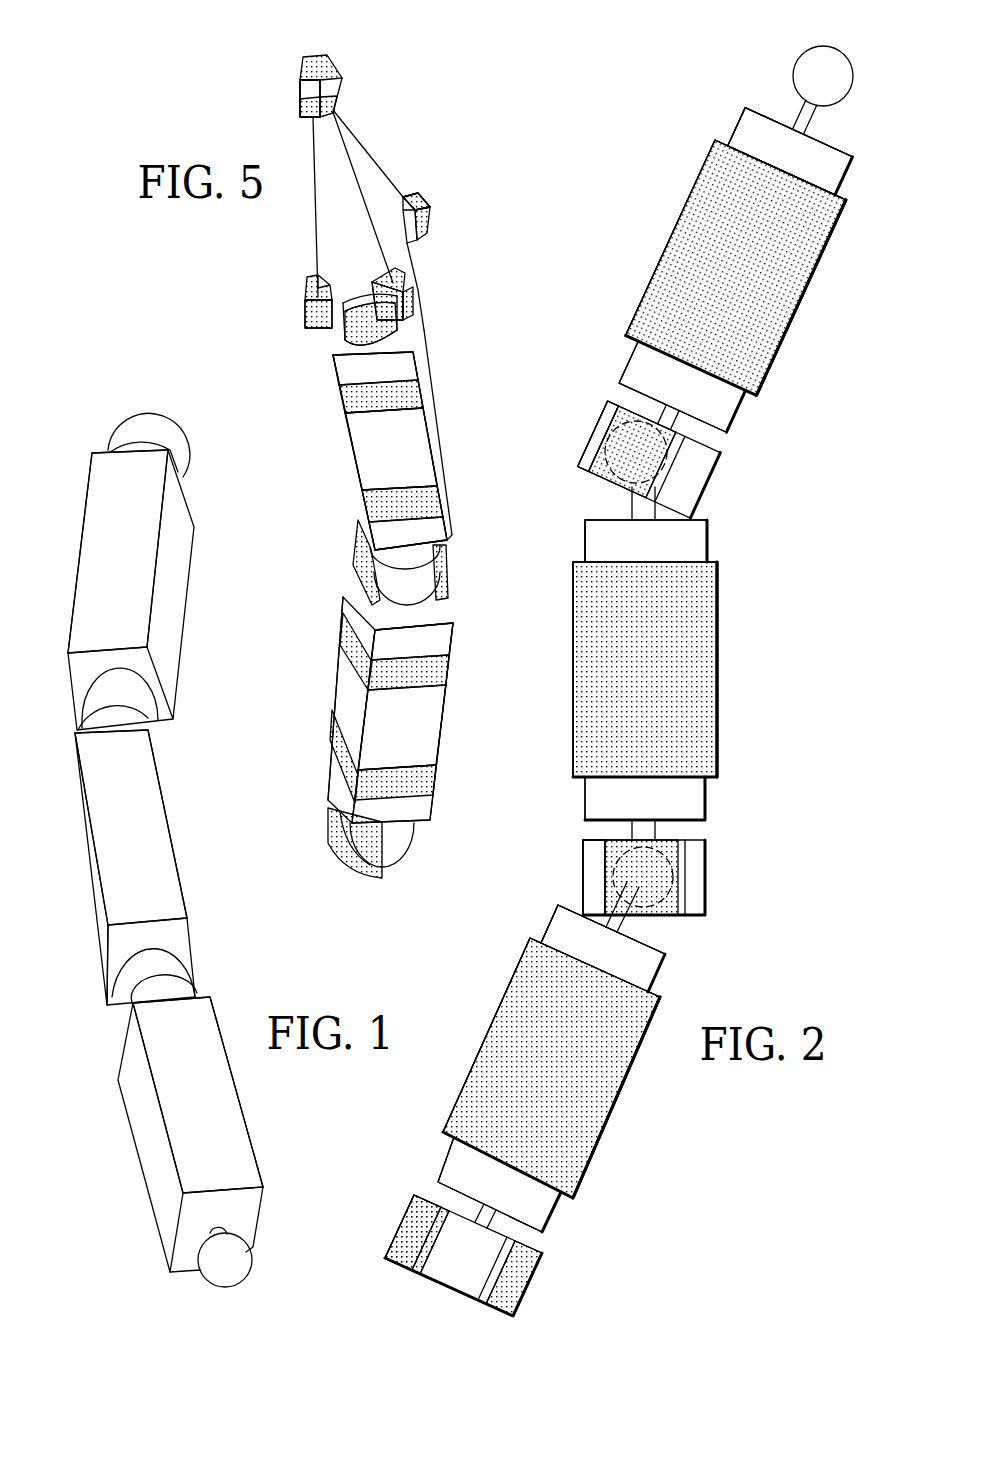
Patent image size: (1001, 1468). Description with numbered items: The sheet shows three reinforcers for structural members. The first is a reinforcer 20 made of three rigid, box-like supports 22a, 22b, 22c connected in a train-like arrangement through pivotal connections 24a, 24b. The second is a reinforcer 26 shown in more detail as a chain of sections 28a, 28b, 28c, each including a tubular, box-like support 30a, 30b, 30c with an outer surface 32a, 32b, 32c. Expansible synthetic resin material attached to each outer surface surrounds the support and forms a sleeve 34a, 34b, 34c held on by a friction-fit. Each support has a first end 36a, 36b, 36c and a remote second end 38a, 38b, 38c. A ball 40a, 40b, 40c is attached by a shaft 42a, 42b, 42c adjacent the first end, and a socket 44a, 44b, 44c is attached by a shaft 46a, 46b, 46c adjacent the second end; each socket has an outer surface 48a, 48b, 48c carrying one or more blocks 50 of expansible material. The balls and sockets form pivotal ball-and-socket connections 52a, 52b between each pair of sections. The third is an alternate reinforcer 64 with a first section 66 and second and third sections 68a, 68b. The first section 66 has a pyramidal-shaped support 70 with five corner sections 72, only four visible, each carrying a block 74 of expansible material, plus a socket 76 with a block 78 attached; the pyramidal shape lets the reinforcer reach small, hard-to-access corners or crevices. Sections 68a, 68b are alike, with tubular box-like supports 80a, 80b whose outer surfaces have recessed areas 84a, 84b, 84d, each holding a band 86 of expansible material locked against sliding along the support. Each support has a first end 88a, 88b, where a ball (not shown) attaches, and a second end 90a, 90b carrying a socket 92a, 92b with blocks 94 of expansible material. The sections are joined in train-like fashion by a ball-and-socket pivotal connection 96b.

In FIG. 1, the reinforcer 20 is at (70, 974).
In FIG. 1, the support 22a is at (180, 545).
In FIG. 1, the support 22b is at (160, 812).
In FIG. 1, the support 22c is at (228, 1103).
In FIG. 1, the pivotal connection 24a is at (150, 718).
In FIG. 1, the pivotal connection 24b is at (180, 972).
In FIG. 2, the reinforcer 26 is at (800, 633).
In FIG. 2, the section 28a is at (850, 251).
In FIG. 2, the section 28b is at (777, 593).
In FIG. 2, the section 28c is at (661, 1112).
In FIG. 2, the support 30a is at (815, 153).
In FIG. 2, the support 30b is at (683, 528).
In FIG. 2, the support 30c is at (670, 968).
In FIG. 2, the outer surface 32a is at (735, 140).
In FIG. 2, the outer surface 32b is at (584, 536).
In FIG. 2, the outer surface 32c is at (665, 956).
In FIG. 2, the sleeve 34a is at (747, 338).
In FIG. 2, the sleeve 34b is at (700, 705).
In FIG. 2, the sleeve 34c is at (600, 1063).
In FIG. 2, the first end 36a is at (838, 196).
In FIG. 2, the first end 36b is at (708, 551).
In FIG. 2, the first end 36c is at (648, 988).
In FIG. 2, the second end 38a is at (742, 413).
In FIG. 2, the second end 38b is at (707, 800).
In FIG. 2, the second end 38c is at (550, 1212).
In FIG. 2, the ball 40a is at (808, 62).
In FIG. 2, the ball 40b is at (618, 428).
In FIG. 2, the ball 40c is at (675, 875).
In FIG. 2, the shaft 42a is at (783, 125).
In FIG. 2, the shaft 42b is at (632, 505).
In FIG. 2, the shaft 42c is at (645, 928).
In FIG. 2, the socket 44a is at (605, 480).
In FIG. 2, the socket 44b is at (707, 862).
In FIG. 2, the socket 44c is at (407, 1227).
In FIG. 2, the shaft 46a is at (678, 433).
In FIG. 2, the shaft 46b is at (657, 828).
In FIG. 2, the shaft 46c is at (473, 1210).
In FIG. 2, the outer surface 48a is at (685, 485).
In FIG. 2, the outer surface 48b is at (693, 906).
In FIG. 2, the outer surface 48c is at (443, 1272).
In FIG. 2, the block 50 is at (612, 402).
In FIG. 2, the ball-and-socket connection 52a is at (586, 452).
In FIG. 2, the ball-and-socket connection 52b is at (592, 876).
In FIG. 5, the reinforcer 64 is at (285, 452).
In FIG. 5, the first section 66 is at (386, 128).
In FIG. 5, the second section 68a is at (329, 441).
In FIG. 5, the third section 68b is at (314, 682).
In FIG. 5, the pyramidal-shaped support 70 is at (330, 238).
In FIG. 5, the corner section 72 is at (283, 98).
In FIG. 5, the block 74 is at (312, 62).
In FIG. 5, the socket 76 is at (337, 333).
In FIG. 5, the block 78 is at (388, 333).
In FIG. 5, the support 80a is at (420, 473).
In FIG. 5, the support 80b is at (427, 715).
In FIG. 5, the recessed area 84a is at (382, 413).
In FIG. 5, the recessed area 84b is at (373, 492).
In FIG. 5, the recessed area 84d is at (423, 768).
In FIG. 5, the band 86 is at (410, 393).
In FIG. 5, the first end 88a is at (338, 385).
In FIG. 5, the first end 88b is at (437, 632).
In FIG. 5, the second end 90a is at (430, 530).
In FIG. 5, the second end 90b is at (337, 762).
In FIG. 5, the socket 92a is at (363, 605).
In FIG. 5, the socket 92b is at (400, 842).
In FIG. 5, the block 94 is at (372, 583).
In FIG. 5, the ball-and-socket pivotal connection 96b is at (417, 557).